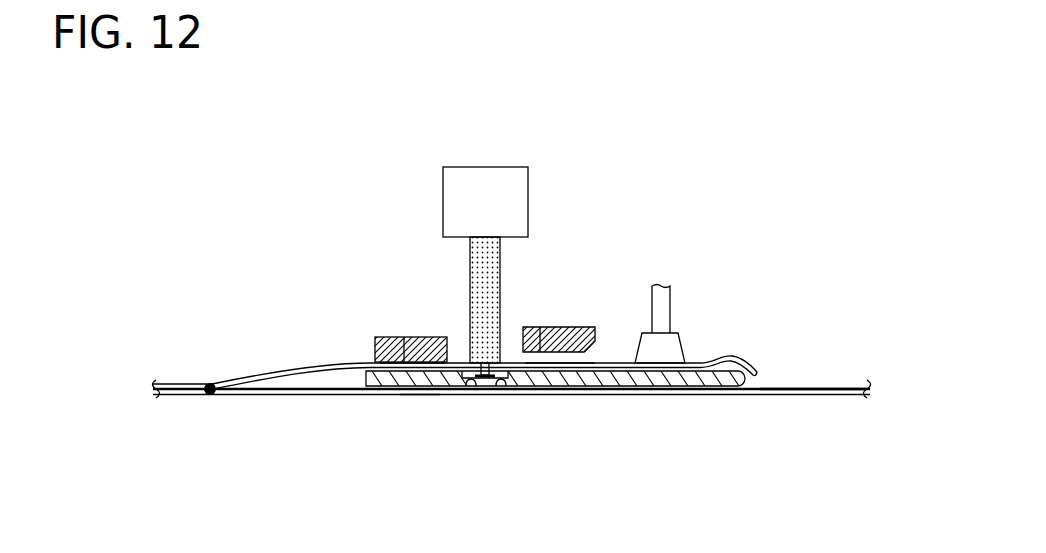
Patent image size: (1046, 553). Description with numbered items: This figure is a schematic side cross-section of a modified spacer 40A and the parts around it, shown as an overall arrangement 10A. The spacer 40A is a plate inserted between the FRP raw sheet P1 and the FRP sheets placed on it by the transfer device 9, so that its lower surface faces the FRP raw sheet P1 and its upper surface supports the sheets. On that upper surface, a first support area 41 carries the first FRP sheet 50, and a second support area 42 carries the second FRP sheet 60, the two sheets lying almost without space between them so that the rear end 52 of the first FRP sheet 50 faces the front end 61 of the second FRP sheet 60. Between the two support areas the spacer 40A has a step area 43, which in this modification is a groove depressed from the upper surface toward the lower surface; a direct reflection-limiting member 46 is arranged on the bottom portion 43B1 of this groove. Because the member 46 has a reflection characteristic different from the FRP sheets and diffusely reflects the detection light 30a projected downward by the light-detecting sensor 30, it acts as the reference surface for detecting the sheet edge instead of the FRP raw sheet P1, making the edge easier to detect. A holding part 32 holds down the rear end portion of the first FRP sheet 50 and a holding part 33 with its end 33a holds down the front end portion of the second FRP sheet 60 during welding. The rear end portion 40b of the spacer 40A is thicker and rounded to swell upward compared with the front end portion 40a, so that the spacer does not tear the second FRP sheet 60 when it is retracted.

The bonding apparatus 10A is at (495, 228).
The light-detecting sensor 30 is at (528, 203).
The detection light 30a is at (470, 256).
The holding part 32 is at (392, 337).
The first support area 41 is at (404, 353).
The rear end 52 is at (482, 366).
The front end 61 is at (488, 366).
The second support area 42 is at (540, 354).
The holding part 33 is at (545, 327).
The chamfered portion 33a is at (598, 350).
The second FRP sheet 60 is at (620, 363).
The first FRP sheet 50 is at (320, 366).
The transfer device 9 is at (671, 308).
The step area 43 is at (473, 386).
The bottom portion 43B1 is at (498, 386).
The direct reflection-limiting member 46 is at (487, 386).
The front end portion 40a is at (377, 398).
The rear end portion 40b is at (721, 399).
The spacer 40A is at (590, 387).
The FRP raw sheet P1 is at (418, 396).